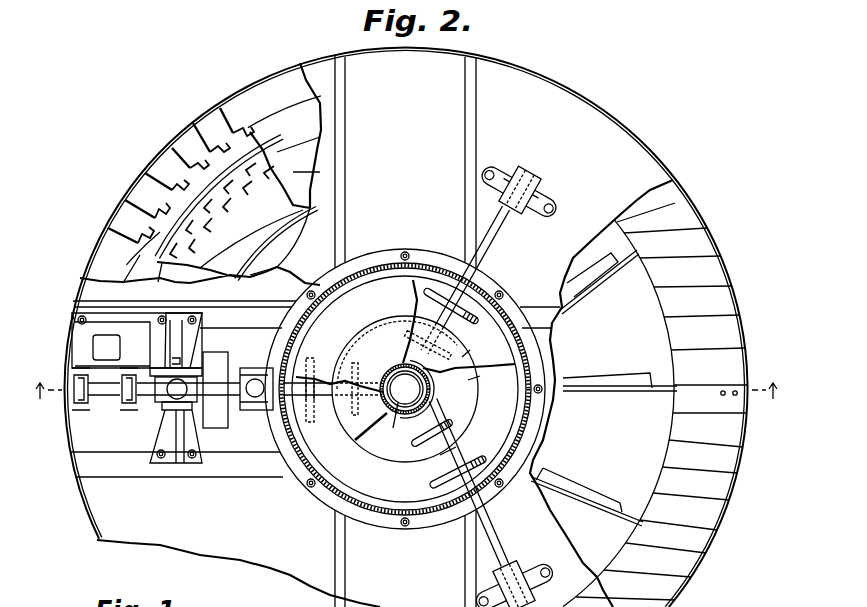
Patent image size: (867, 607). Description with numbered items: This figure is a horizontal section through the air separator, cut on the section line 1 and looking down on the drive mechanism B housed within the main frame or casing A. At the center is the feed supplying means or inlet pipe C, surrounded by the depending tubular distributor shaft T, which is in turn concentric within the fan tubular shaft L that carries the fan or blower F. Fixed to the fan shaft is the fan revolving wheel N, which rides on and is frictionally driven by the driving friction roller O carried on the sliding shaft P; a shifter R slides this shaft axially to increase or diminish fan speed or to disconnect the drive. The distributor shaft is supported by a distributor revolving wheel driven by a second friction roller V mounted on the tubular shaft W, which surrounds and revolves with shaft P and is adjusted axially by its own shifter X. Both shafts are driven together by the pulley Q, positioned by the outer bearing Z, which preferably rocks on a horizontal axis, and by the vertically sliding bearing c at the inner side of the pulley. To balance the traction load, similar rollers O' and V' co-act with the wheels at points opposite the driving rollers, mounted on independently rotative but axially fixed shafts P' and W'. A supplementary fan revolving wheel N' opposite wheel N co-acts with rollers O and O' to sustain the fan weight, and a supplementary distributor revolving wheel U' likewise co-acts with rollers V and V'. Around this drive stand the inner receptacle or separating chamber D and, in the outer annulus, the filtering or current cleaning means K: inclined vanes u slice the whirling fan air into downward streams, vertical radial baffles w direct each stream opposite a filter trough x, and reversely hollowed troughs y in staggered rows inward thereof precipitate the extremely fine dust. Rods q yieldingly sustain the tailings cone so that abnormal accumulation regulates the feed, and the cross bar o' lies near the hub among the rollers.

The main frame or casing A is at (752, 431).
The inclined vanes u is at (692, 464).
The rods q is at (720, 393).
The filtering or current cleaning means K is at (212, 179).
The filter troughs x is at (214, 162).
The vertical radial baffles w is at (140, 180).
The reversely hollowed troughs y is at (228, 203).
The inner receptacle or separating chamber D is at (237, 208).
The drive mechanism B is at (274, 298).
The supplementary distributor revolving wheel U' is at (405, 389).
The feed supplying means or inlet pipe C is at (405, 389).
The distributor tubular shaft T is at (397, 431).
The outer bearing Z is at (197, 396).
The shifter R is at (80, 368).
The shifter X is at (147, 362).
The sliding shaft P is at (105, 403).
The tubular shaft W is at (167, 388).
The pulley Q is at (213, 360).
The vertically sliding bearing c is at (238, 403).
The driving friction roller V is at (315, 409).
The driving friction roller O is at (345, 414).
The fan tubular shaft L is at (489, 259).
The balancing roller V' is at (467, 356).
The balancing roller O' is at (411, 345).
The cross bar o' is at (431, 427).
The idler roller shaft P' is at (461, 448).
The fan revolving wheel N is at (475, 346).
The supplementary fan revolving wheel N' is at (486, 375).
The idler roller shaft W' is at (494, 502).
The fan or blower F is at (592, 398).
The section line 1- 1 is at (401, 393).